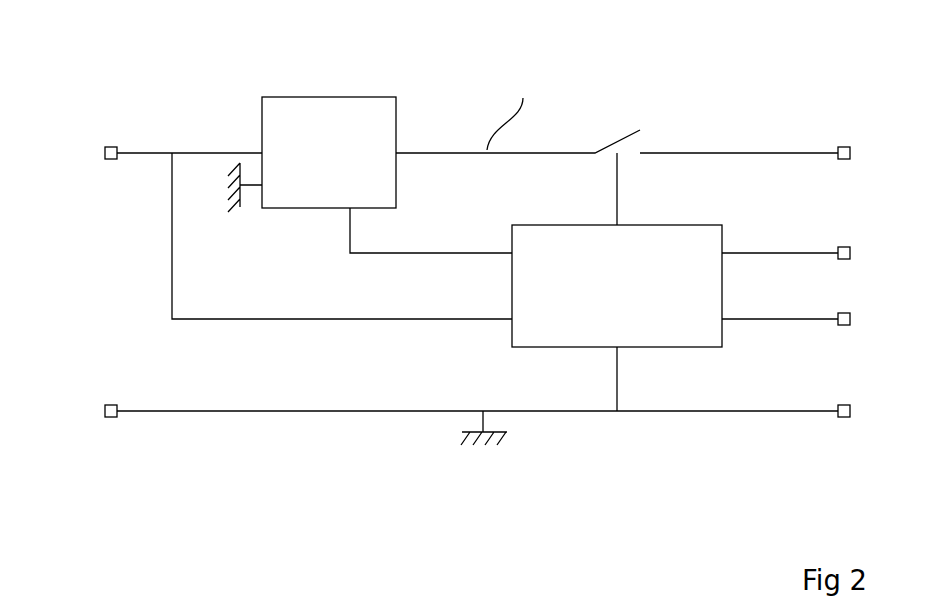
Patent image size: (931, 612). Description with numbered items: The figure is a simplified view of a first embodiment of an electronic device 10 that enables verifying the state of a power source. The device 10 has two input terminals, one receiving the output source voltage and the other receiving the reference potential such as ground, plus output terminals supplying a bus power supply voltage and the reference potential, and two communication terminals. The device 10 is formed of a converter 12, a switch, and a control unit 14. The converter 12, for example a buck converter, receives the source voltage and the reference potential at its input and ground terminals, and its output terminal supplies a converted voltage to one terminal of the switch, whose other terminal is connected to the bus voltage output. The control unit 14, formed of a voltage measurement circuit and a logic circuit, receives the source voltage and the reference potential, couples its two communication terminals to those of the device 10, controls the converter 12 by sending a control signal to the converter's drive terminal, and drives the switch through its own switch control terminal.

The electronic device 10 is at (156, 47).
The converter 12 is at (325, 97).
The control unit 14 is at (702, 225).